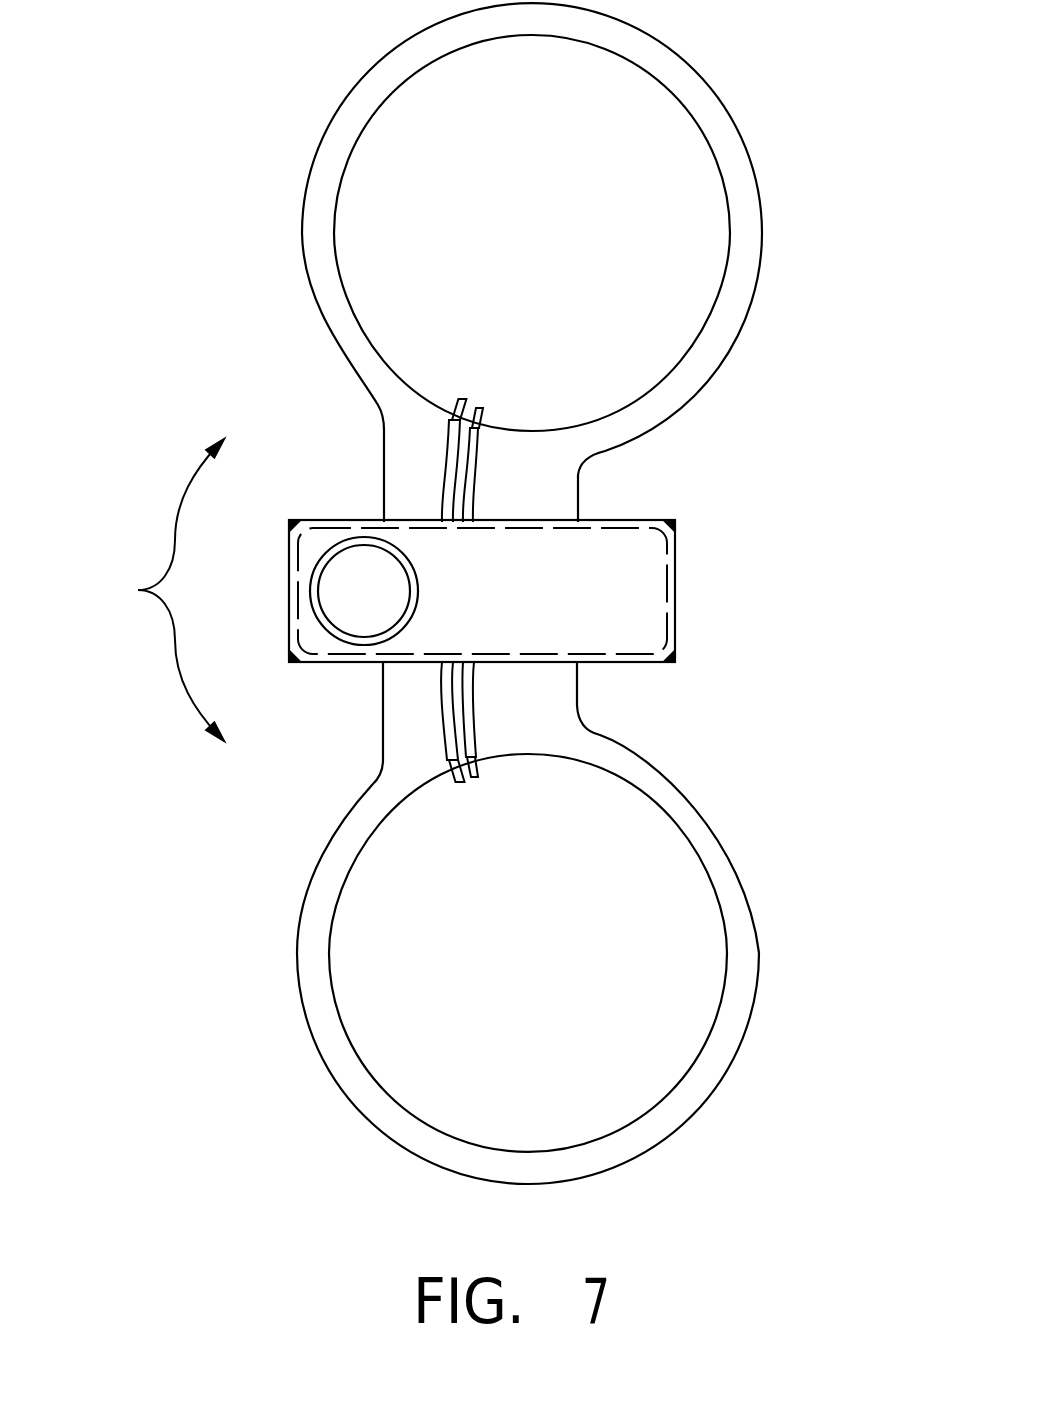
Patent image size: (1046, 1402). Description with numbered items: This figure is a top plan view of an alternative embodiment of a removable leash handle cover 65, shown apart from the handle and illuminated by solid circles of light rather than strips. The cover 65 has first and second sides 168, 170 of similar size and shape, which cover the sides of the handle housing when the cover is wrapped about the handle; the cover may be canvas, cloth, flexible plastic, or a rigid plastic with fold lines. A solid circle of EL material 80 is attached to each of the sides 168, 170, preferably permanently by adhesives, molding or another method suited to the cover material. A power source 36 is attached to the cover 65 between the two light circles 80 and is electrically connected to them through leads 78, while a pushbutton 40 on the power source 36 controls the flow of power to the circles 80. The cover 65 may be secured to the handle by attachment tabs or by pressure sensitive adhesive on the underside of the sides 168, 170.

The power source 36 is at (666, 594).
The pushbutton 40 is at (314, 589).
The cover 65 is at (138, 590).
The leads 78 is at (455, 459).
The solid circle of EL material 80 is at (678, 98).
The first side 168 is at (755, 172).
The second side 170 is at (757, 970).